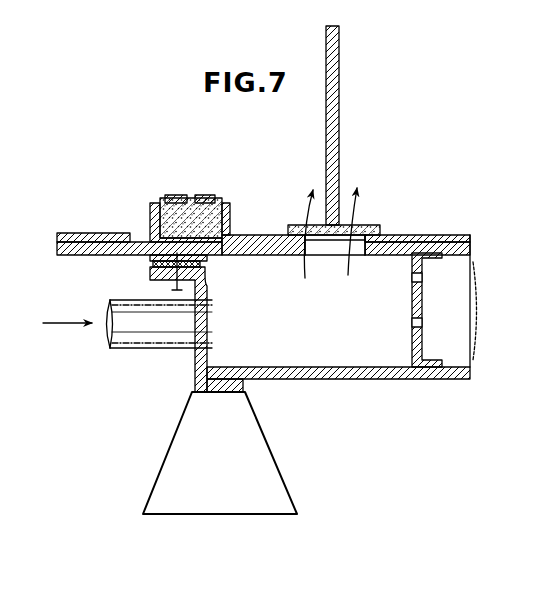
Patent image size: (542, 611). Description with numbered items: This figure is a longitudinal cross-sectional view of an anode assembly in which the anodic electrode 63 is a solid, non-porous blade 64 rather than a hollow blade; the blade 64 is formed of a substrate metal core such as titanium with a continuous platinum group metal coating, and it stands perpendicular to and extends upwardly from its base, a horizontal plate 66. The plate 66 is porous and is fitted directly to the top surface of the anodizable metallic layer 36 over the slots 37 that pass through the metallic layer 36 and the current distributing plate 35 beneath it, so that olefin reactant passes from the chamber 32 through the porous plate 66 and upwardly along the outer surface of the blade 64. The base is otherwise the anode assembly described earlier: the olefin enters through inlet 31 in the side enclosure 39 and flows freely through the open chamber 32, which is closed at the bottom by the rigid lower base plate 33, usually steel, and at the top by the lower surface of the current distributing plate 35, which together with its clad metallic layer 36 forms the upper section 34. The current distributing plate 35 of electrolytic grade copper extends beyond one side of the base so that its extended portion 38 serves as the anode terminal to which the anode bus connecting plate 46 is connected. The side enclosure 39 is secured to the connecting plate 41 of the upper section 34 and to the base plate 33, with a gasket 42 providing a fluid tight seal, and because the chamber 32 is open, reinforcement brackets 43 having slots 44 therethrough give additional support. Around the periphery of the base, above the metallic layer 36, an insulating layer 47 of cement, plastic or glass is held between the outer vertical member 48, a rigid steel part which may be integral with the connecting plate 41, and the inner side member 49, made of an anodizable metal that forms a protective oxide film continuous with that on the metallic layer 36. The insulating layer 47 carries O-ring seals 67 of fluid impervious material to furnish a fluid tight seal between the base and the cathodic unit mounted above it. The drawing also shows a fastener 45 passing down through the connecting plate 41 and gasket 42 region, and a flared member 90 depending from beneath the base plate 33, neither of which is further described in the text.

The inlet 31 is at (155, 341).
The chamber 32 is at (316, 355).
The lower base plate 33 is at (380, 378).
The upper section 34 is at (410, 241).
The current distributing plate 35 is at (461, 256).
The metallic layer 36 is at (452, 235).
The slots 37 is at (332, 250).
The extended portion 38 is at (92, 251).
The side enclosure 39 is at (195, 366).
The connecting plate 41 is at (150, 258).
The gasket 42 is at (200, 263).
The reinforcement brackets 43 is at (423, 316).
The slots 44 is at (412, 324).
The screw 45 is at (172, 290).
The anode bus connecting plate 46 is at (83, 236).
The insulating layer 47 is at (166, 210).
The outer vertical member 48 is at (150, 213).
The inner side member 49 is at (231, 214).
The electrode 63 is at (342, 80).
The blade 64 is at (327, 116).
The horizontal plate 66 is at (364, 226).
The O-ring seals 67 is at (215, 203).
The funnel 90 is at (167, 462).